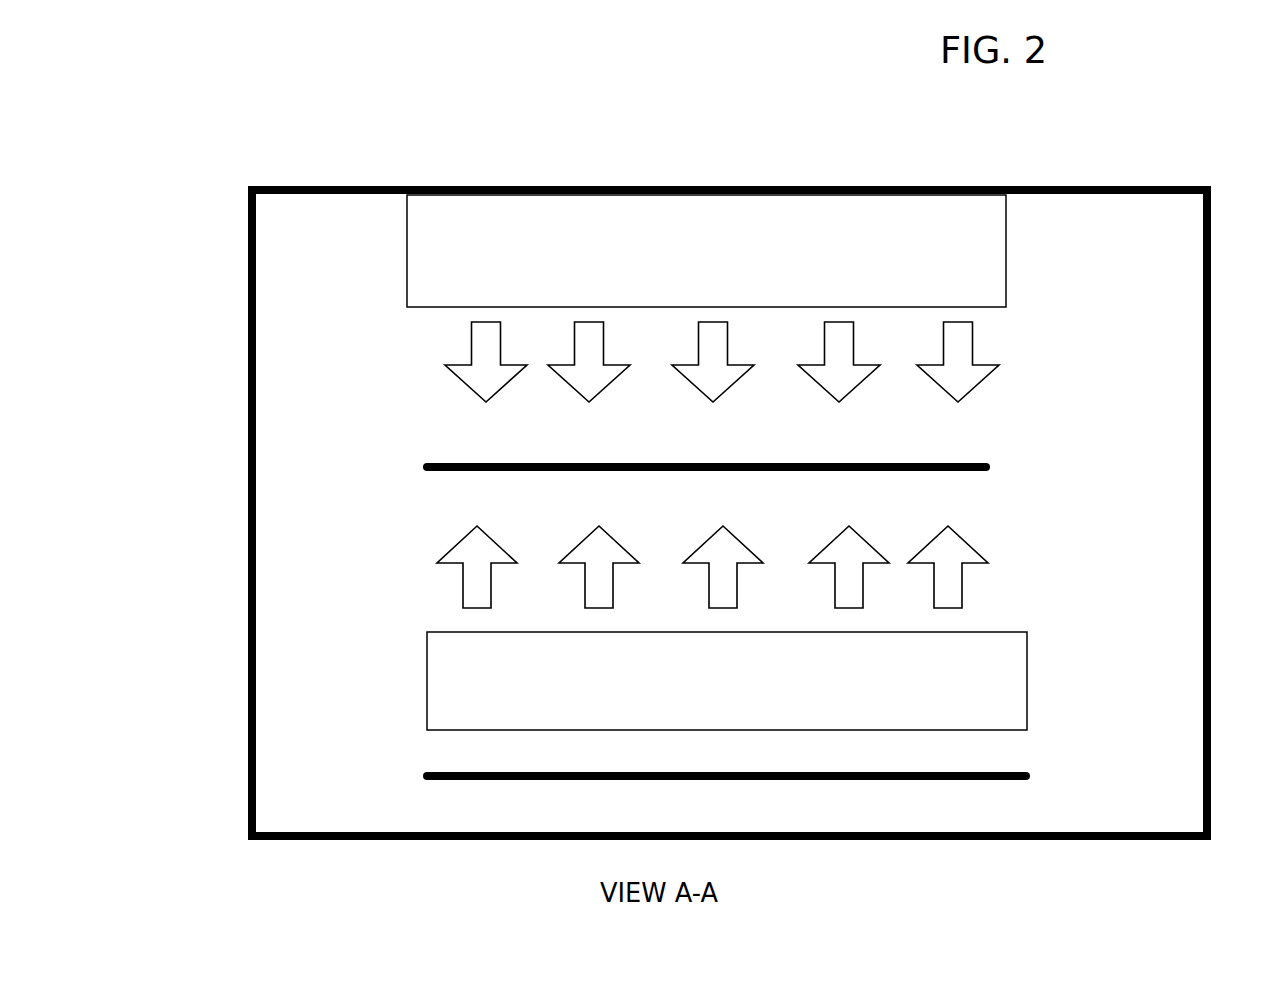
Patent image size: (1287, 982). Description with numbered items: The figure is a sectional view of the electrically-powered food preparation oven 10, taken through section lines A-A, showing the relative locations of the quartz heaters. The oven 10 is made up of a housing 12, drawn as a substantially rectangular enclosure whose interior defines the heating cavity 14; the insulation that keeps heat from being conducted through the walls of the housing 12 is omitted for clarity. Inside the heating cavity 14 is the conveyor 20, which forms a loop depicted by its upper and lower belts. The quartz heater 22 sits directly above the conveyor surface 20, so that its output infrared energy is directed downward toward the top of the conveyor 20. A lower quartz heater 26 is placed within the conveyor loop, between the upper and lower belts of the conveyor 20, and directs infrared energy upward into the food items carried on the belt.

The food preparation oven 10 is at (246, 67).
The housing 12 is at (1213, 209).
The heating cavity 14 is at (639, 427).
The conveyor 20 is at (395, 764).
The quartz heater 22 is at (706, 298).
The lower quartz heater 26 is at (727, 628).